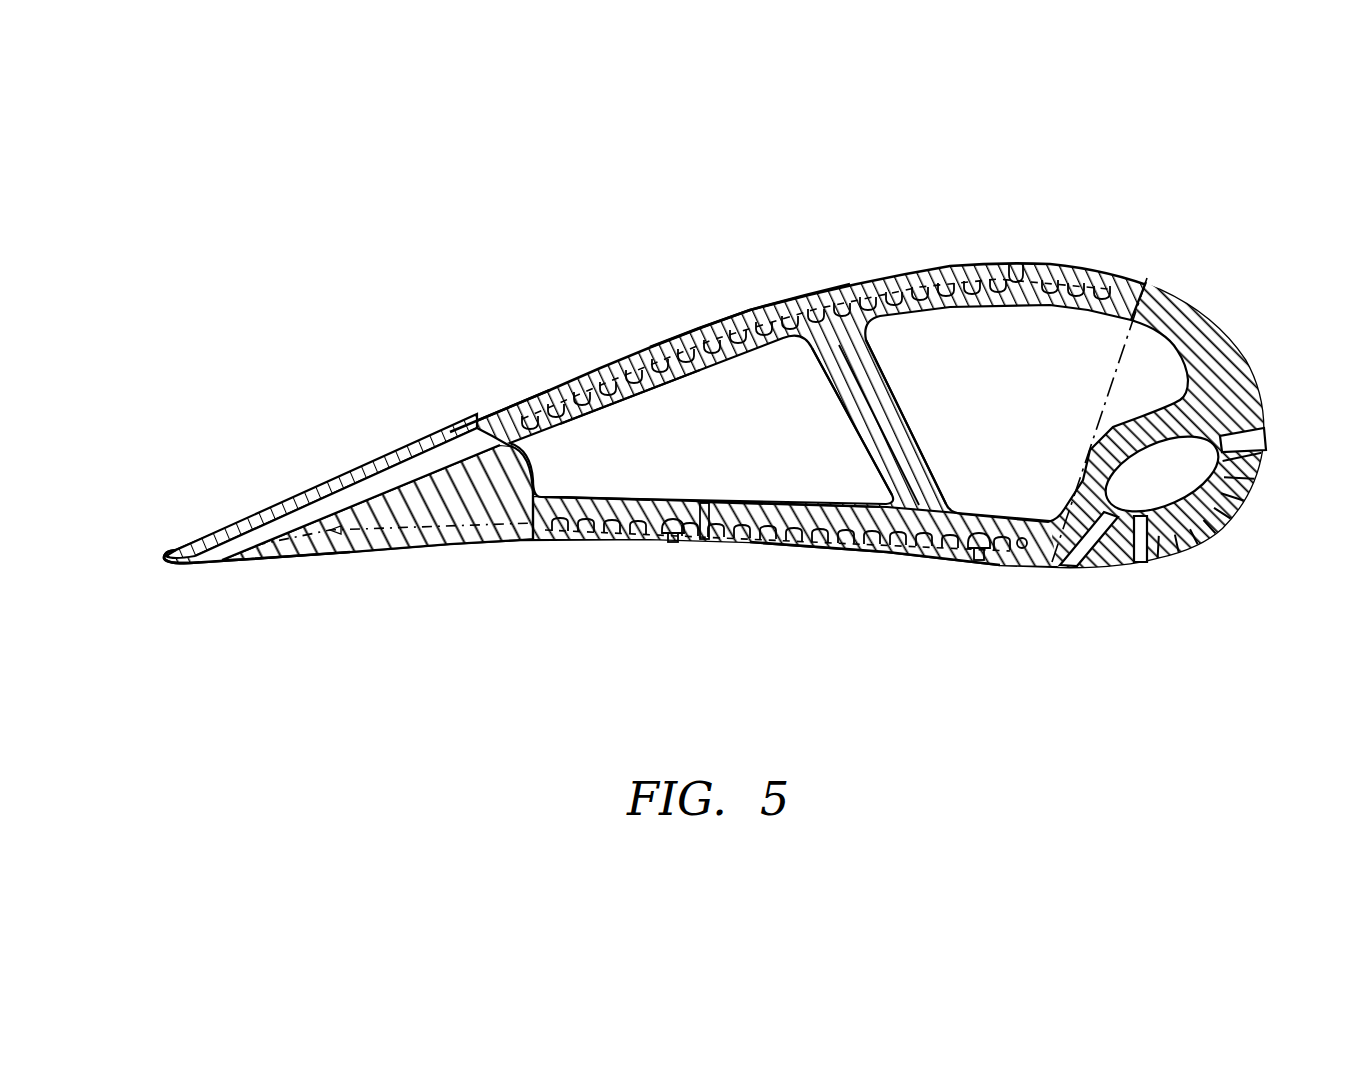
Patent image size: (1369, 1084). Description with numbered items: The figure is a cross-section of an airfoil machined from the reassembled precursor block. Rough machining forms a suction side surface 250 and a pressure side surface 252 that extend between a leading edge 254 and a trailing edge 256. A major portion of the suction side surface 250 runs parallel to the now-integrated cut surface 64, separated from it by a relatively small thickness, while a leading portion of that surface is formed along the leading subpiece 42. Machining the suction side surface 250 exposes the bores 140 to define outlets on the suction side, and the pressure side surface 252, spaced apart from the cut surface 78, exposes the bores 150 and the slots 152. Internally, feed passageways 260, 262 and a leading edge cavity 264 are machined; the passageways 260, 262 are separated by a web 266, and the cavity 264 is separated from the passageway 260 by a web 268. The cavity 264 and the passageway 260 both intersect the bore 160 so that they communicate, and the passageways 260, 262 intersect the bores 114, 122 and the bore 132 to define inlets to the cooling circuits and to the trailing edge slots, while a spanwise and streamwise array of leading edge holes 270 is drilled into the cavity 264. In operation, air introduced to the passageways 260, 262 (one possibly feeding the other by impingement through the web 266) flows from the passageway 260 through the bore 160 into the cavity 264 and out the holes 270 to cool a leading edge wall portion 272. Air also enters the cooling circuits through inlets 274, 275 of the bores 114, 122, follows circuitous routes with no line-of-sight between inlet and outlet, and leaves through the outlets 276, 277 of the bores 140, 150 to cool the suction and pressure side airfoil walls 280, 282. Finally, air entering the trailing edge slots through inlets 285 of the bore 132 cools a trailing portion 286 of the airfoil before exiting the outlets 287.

The leading subpiece 42 is at (1228, 376).
The cut surface 64 is at (1095, 283).
The cut surface 78 is at (1024, 549).
The bores 114 is at (745, 318).
The bores 122 is at (705, 542).
The bore 132 is at (508, 437).
The bores 140 is at (1015, 262).
The bores 150 is at (980, 562).
The slots 152 is at (242, 552).
The bore 160 is at (1123, 566).
The suction side surface 250 is at (770, 292).
The pressure side surface 252 is at (853, 562).
The leading edge 254 is at (1265, 478).
The trailing edge 256 is at (163, 557).
The feed passageway 260 is at (1016, 386).
The feed passageway 262 is at (750, 398).
The leading edge cavity 264 is at (1136, 484).
The web 266 is at (888, 408).
The web 268 is at (1170, 400).
The leading edge holes 270 is at (1225, 540).
The leading edge wall portion 272 is at (1240, 518).
The inlets 274 is at (618, 407).
The inlets 275 is at (550, 492).
The outlets 276 is at (703, 325).
The outlets 277 is at (671, 547).
The suction side airfoil wall 280 is at (558, 395).
The pressure side airfoil wall 282 is at (787, 496).
The inlets 285 is at (528, 502).
The trailing portion 286 is at (367, 540).
The outlets 287 is at (216, 566).